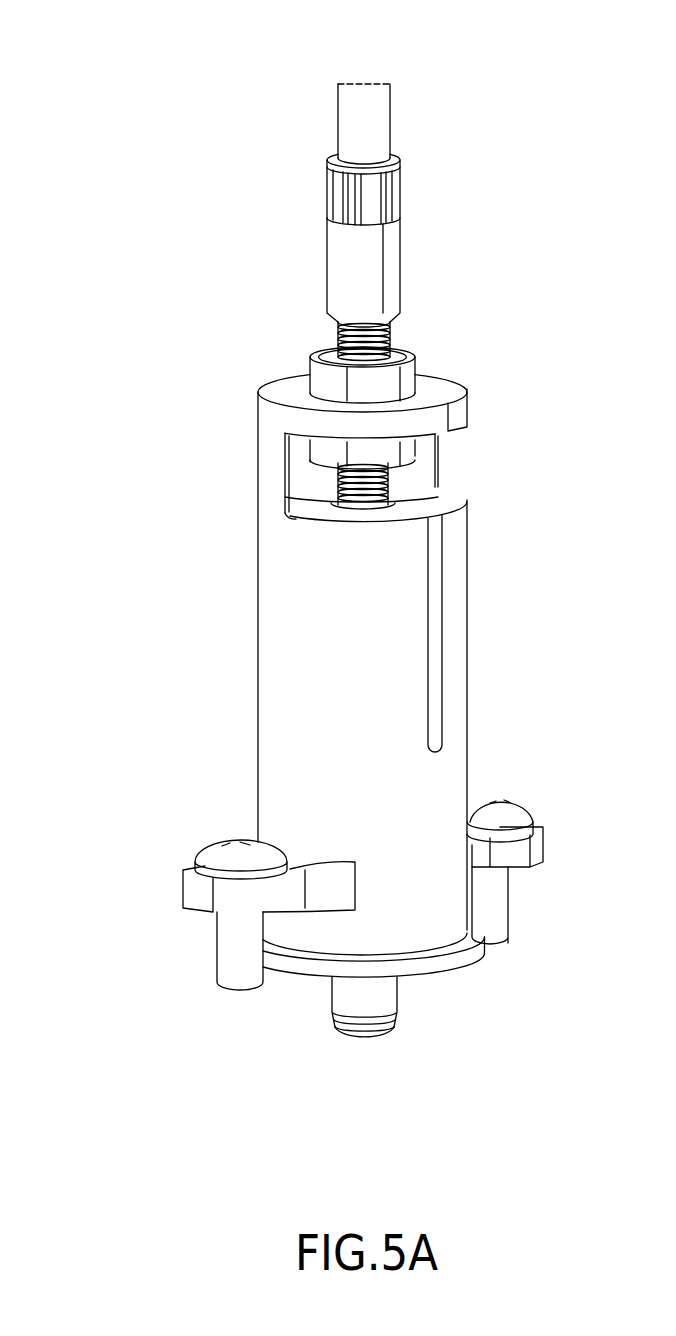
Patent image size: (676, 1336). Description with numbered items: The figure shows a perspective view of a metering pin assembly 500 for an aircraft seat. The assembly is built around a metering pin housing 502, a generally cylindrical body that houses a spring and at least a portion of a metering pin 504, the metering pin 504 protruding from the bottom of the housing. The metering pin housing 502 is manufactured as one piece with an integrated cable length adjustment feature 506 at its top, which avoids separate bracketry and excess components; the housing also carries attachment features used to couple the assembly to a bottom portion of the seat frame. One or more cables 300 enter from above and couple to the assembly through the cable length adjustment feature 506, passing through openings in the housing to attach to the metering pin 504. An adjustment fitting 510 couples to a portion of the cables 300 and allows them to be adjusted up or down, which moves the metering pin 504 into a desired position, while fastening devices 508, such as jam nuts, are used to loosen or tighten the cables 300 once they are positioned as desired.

The metering pin assembly 500 is at (164, 42).
The cables 300 is at (382, 122).
The adjustment fitting 510 is at (377, 265).
The fastening devices 508 is at (410, 372).
The cable length adjustment feature 506 is at (458, 392).
The metering pin housing 502 is at (270, 678).
The metering pin 504 is at (385, 995).